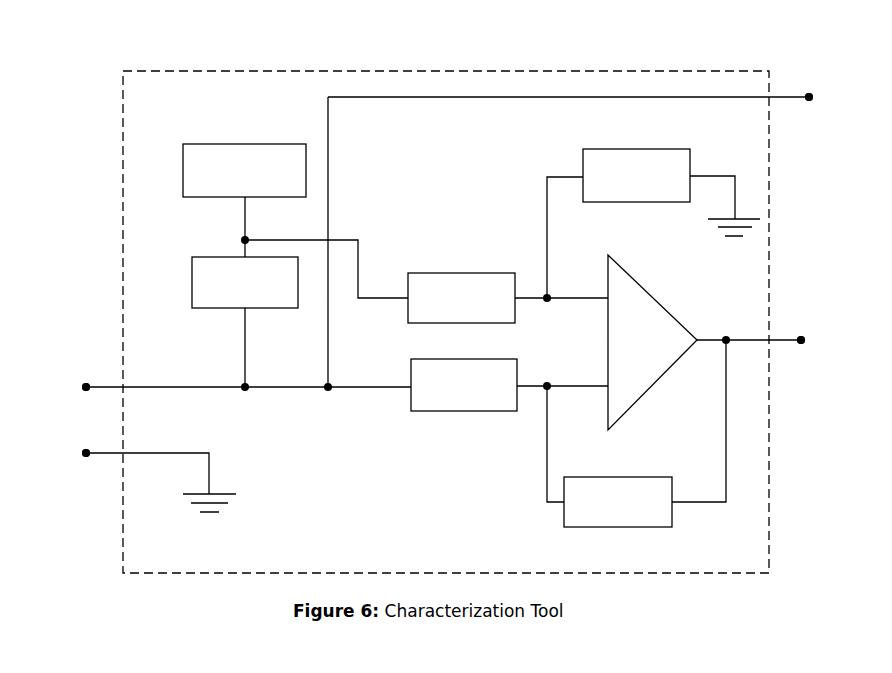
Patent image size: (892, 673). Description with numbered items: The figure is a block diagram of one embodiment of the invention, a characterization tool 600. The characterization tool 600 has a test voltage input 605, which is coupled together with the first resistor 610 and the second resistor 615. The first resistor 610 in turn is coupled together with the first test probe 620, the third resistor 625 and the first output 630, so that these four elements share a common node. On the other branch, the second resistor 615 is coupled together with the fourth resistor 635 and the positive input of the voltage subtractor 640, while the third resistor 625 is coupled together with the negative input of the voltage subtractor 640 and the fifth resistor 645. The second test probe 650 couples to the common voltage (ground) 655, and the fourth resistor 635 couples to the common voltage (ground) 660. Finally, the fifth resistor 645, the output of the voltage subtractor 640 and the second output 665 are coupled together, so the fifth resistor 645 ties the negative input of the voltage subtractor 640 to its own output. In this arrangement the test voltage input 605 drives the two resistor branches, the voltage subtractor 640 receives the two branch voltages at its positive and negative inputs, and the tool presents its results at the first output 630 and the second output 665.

The characterization tool 600 is at (446, 322).
The test voltage input 605 is at (244, 170).
The resistor 1 610 is at (245, 282).
The resistor 2 615 is at (461, 298).
The test probe 1 620 is at (76, 380).
The resistor 3 625 is at (464, 385).
The output 1 630 is at (805, 113).
The resistor 4 635 is at (636, 175).
The voltage subtractor 640 is at (652, 342).
The resistor 5 645 is at (618, 502).
The test probe 2 650 is at (77, 463).
The common voltage (ground) 655 is at (237, 503).
The common voltage (ground) 660 is at (710, 237).
The output 2 665 is at (797, 352).